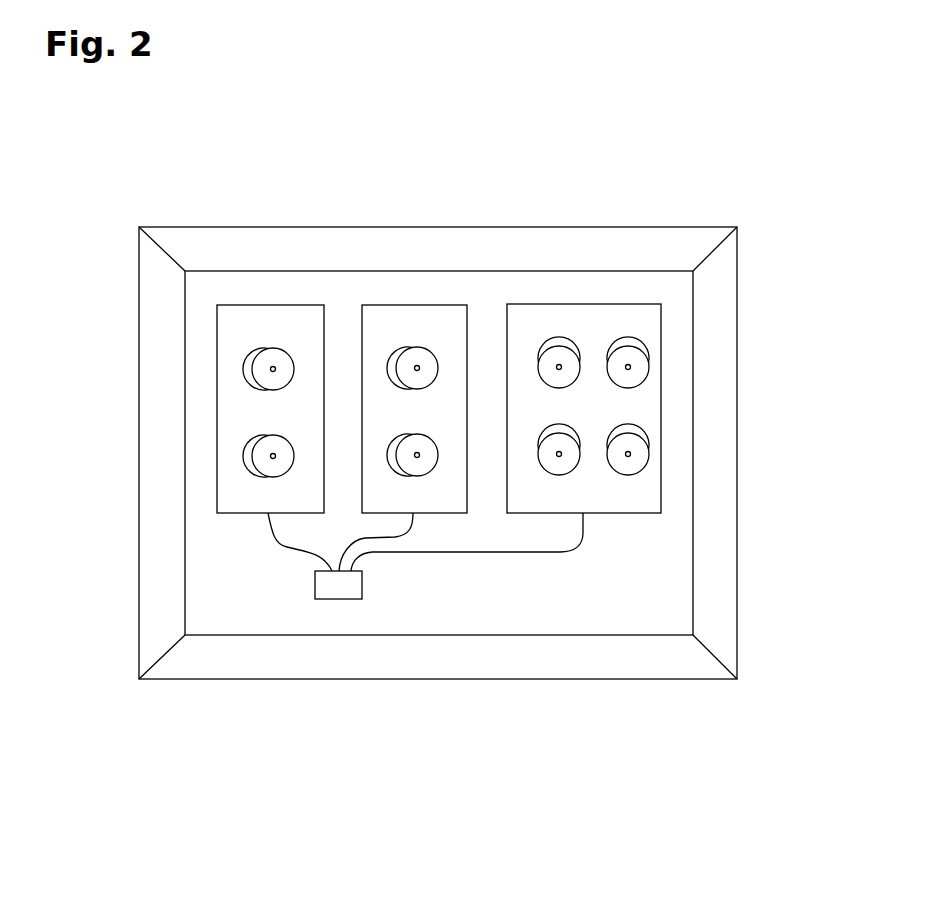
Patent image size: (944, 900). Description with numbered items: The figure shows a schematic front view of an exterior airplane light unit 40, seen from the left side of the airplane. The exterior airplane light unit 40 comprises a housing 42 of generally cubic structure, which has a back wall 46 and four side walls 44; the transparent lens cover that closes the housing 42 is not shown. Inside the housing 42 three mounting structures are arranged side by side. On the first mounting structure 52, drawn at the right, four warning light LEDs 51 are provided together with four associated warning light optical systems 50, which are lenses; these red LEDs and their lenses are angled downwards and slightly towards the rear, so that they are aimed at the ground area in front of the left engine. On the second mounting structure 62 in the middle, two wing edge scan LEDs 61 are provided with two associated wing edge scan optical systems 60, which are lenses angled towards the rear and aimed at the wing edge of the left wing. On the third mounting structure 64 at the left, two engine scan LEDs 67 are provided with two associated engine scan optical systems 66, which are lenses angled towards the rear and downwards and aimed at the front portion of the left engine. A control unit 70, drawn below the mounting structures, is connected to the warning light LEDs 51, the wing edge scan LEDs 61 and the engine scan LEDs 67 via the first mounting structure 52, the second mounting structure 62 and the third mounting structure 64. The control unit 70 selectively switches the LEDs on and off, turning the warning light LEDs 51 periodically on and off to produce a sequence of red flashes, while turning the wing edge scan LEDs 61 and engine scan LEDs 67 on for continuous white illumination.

The exterior airplane light unit 40 is at (233, 177).
The housing 42 is at (737, 553).
The side wall 44 is at (655, 248).
The back wall 46 is at (527, 605).
The warning light optical system 50 is at (563, 379).
The warning light LED 51 is at (559, 367).
The first mounting structure 52 is at (625, 520).
The wing edge scan optical system 60 is at (425, 450).
The wing edge scan LED 61 is at (417, 455).
The second mounting structure 62 is at (415, 305).
The third mounting structure 64 is at (241, 520).
The engine scan optical system 66 is at (262, 382).
The engine scan LED 67 is at (273, 369).
The control unit 70 is at (362, 585).